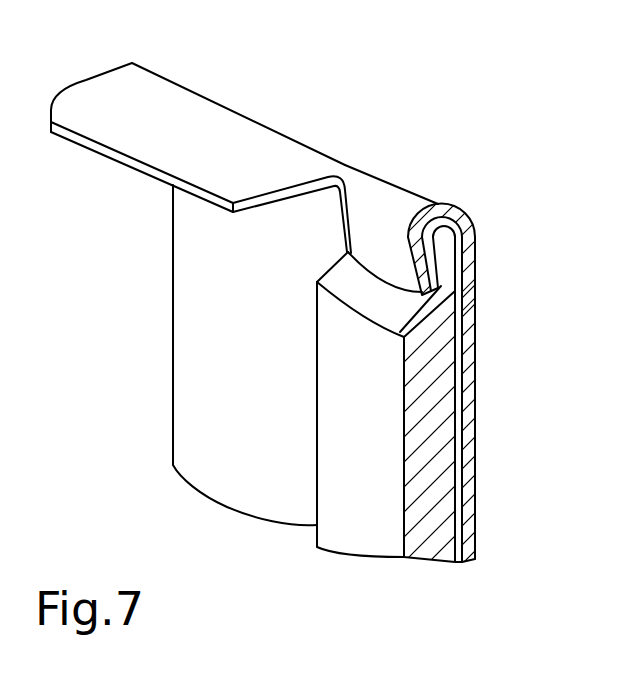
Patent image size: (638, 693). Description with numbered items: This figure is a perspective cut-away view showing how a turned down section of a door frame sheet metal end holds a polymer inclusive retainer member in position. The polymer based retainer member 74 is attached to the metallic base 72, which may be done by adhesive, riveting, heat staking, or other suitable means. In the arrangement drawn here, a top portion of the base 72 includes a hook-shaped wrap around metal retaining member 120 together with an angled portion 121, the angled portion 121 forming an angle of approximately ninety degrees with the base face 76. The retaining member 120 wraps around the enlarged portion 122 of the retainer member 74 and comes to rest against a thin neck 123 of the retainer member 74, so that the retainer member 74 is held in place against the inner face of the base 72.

The polymer based retainer member 74 is at (312, 320).
The angled portion 121 is at (243, 135).
The hook-shaped wrap around metal retaining member 120 is at (378, 232).
The enlarged portion 122 is at (450, 250).
The thin neck 123 is at (453, 317).
The base face 76 is at (467, 463).
The metallic base 72 is at (536, 424).